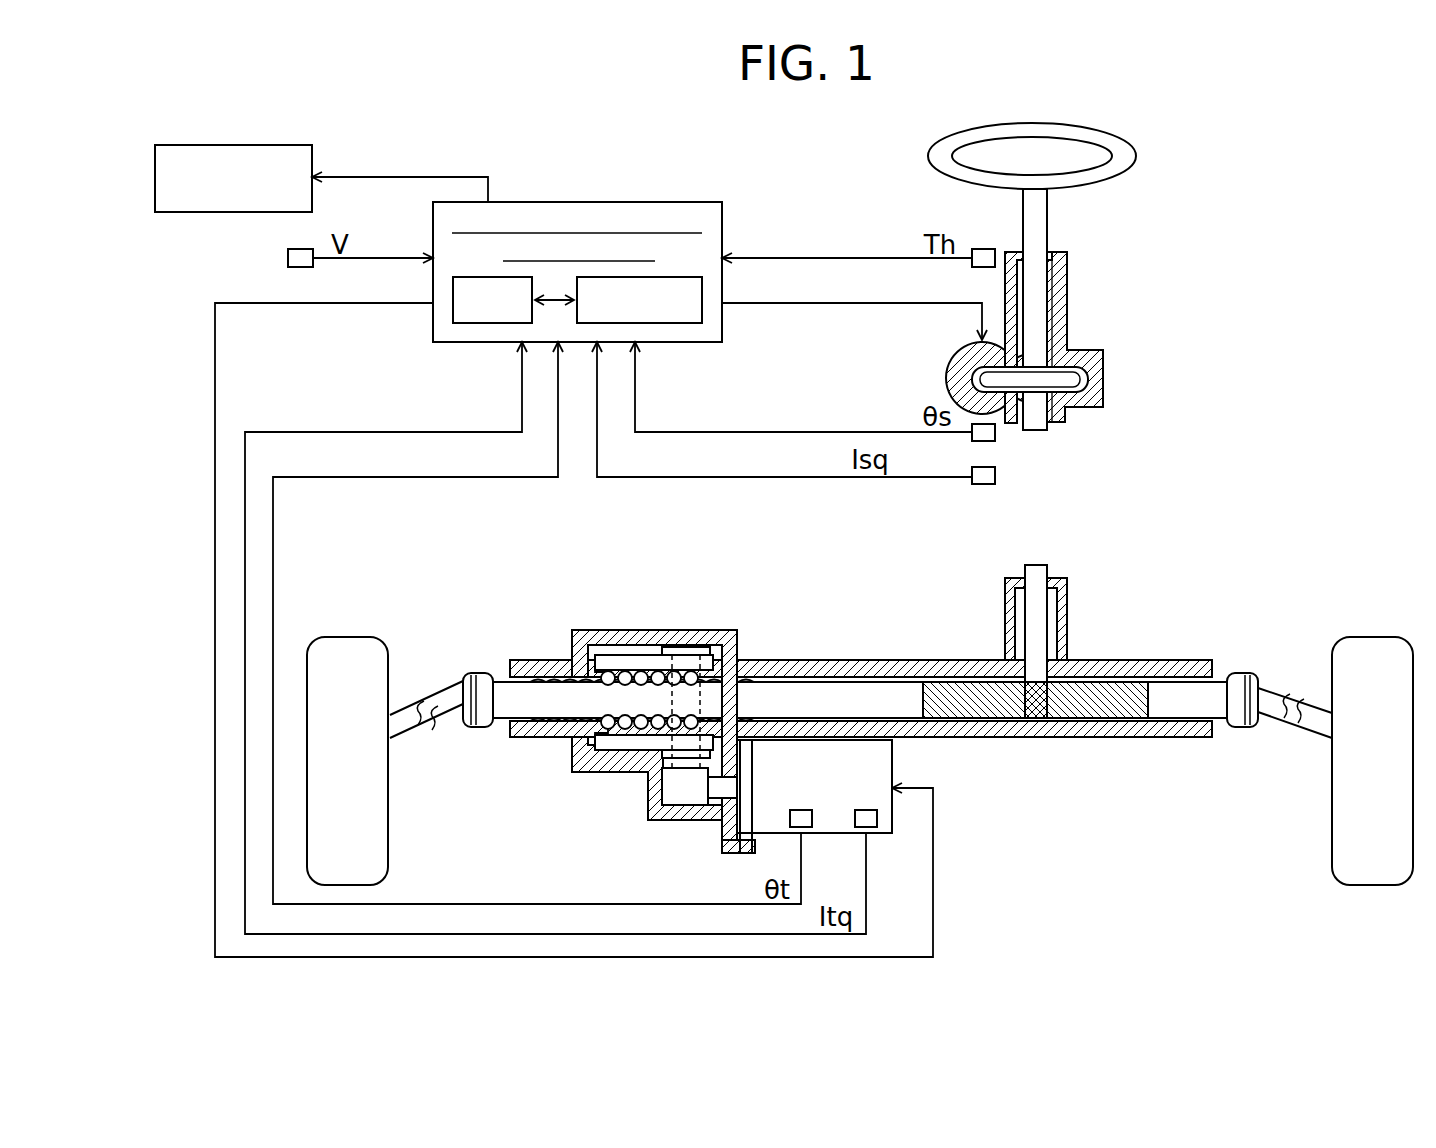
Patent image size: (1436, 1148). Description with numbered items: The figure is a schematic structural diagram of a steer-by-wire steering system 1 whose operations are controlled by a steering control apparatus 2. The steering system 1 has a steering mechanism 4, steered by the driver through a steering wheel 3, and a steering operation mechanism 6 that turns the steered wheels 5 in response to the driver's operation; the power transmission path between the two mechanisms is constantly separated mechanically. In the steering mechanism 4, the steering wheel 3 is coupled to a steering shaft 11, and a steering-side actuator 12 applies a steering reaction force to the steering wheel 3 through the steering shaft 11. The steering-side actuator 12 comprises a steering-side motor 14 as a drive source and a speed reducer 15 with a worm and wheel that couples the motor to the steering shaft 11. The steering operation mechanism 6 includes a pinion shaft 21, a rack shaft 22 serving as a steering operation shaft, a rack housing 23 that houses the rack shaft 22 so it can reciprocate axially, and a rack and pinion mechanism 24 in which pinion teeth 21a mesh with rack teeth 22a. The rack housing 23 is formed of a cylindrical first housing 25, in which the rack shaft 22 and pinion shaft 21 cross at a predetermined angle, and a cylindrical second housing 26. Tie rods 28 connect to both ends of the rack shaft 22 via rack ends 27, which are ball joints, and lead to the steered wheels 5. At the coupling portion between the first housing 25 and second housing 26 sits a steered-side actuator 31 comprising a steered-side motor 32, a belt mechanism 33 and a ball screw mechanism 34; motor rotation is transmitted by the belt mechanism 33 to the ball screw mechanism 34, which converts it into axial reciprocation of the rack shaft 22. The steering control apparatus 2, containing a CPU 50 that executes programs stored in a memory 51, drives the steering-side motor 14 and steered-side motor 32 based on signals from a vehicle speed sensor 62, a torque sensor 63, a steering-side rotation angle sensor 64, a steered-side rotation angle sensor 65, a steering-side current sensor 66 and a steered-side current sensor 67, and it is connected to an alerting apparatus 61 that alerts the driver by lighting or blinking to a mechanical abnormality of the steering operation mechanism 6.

The steering system 1 is at (1192, 420).
The steering control apparatus 2 is at (577, 264).
The steering wheel 3 is at (1137, 152).
The steering mechanism 4 is at (1142, 421).
The steered wheels 5 is at (352, 637).
The steering operation mechanism 6 is at (1152, 514).
The steering shaft 11 is at (1048, 198).
The steering-side actuator 12 is at (973, 334).
The steering-side motor 14 is at (1008, 356).
The speed reducer 15 is at (992, 405).
The pinion shaft 21 is at (1047, 570).
The pinion teeth 21a is at (1037, 705).
The rack shaft 22 is at (860, 699).
The rack teeth 22a is at (970, 712).
The rack housing 23 is at (730, 572).
The rack and pinion mechanism 24 is at (1078, 738).
The first housing 25 is at (706, 630).
The second housing 26 is at (640, 630).
The rack ends 27 is at (481, 730).
The tie rods 28 is at (438, 700).
The steered-side actuator 31 is at (545, 812).
The steered-side motor 32 is at (824, 819).
The belt mechanism 33 is at (675, 823).
The ball screw mechanism 34 is at (598, 760).
The CPU 50 is at (478, 323).
The memory 51 is at (680, 323).
The alerting apparatus 61 is at (281, 145).
The vehicle speed sensor 62 is at (288, 258).
The torque sensor 63 is at (970, 263).
The steering-side rotation angle sensor 64 is at (970, 442).
The steered-side rotation angle sensor 65 is at (801, 810).
The steering-side current sensor 66 is at (970, 485).
The steered-side current sensor 67 is at (866, 810).